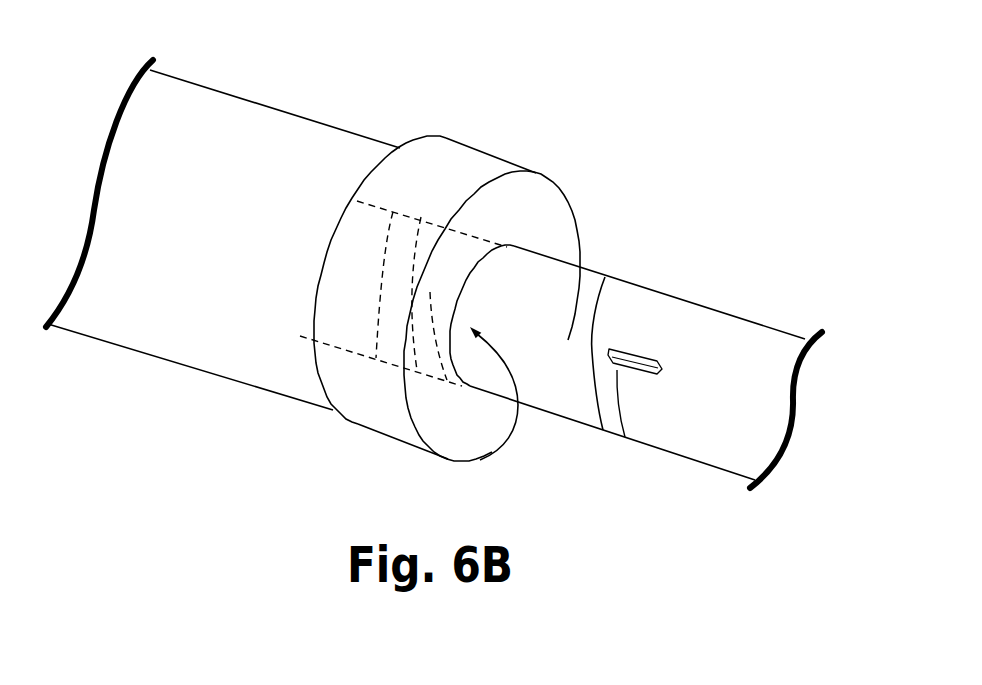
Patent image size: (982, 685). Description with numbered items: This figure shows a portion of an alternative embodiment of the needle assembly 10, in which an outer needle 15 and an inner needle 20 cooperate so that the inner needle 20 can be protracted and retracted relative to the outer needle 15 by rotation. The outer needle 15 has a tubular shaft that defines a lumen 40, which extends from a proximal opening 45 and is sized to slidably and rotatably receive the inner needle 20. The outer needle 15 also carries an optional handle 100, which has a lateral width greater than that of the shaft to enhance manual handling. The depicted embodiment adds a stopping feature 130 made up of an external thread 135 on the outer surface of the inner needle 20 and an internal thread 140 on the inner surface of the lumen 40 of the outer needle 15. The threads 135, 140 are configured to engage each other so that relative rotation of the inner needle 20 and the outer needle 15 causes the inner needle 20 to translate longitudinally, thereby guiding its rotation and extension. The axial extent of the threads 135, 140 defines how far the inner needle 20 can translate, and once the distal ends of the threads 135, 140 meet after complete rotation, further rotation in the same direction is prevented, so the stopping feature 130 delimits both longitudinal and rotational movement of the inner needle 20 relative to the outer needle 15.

The needle assembly 10 is at (136, 376).
The outer needle 15 is at (275, 100).
The inner needle 20 is at (766, 319).
The lumen 40 is at (536, 407).
The proximal opening 45 is at (473, 392).
The handle 100 is at (330, 412).
The stopping feature 130 is at (622, 472).
The external thread 135 is at (640, 352).
The internal thread 140 is at (437, 203).